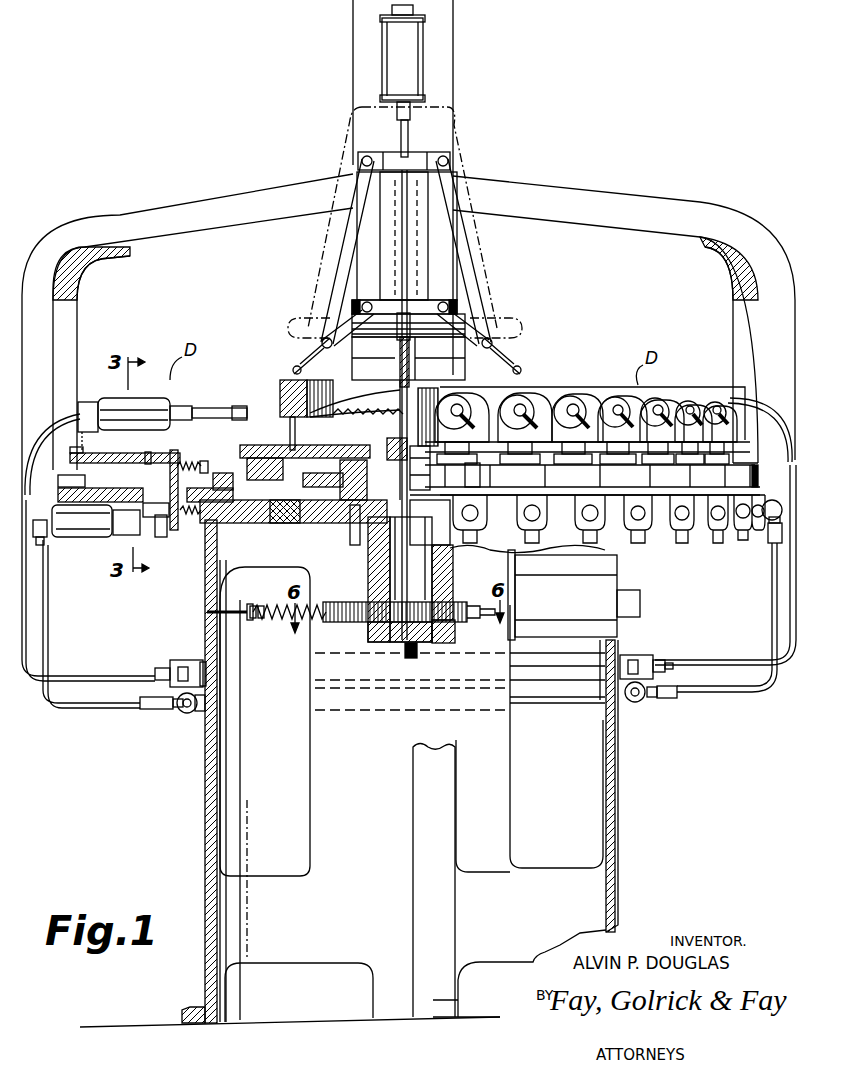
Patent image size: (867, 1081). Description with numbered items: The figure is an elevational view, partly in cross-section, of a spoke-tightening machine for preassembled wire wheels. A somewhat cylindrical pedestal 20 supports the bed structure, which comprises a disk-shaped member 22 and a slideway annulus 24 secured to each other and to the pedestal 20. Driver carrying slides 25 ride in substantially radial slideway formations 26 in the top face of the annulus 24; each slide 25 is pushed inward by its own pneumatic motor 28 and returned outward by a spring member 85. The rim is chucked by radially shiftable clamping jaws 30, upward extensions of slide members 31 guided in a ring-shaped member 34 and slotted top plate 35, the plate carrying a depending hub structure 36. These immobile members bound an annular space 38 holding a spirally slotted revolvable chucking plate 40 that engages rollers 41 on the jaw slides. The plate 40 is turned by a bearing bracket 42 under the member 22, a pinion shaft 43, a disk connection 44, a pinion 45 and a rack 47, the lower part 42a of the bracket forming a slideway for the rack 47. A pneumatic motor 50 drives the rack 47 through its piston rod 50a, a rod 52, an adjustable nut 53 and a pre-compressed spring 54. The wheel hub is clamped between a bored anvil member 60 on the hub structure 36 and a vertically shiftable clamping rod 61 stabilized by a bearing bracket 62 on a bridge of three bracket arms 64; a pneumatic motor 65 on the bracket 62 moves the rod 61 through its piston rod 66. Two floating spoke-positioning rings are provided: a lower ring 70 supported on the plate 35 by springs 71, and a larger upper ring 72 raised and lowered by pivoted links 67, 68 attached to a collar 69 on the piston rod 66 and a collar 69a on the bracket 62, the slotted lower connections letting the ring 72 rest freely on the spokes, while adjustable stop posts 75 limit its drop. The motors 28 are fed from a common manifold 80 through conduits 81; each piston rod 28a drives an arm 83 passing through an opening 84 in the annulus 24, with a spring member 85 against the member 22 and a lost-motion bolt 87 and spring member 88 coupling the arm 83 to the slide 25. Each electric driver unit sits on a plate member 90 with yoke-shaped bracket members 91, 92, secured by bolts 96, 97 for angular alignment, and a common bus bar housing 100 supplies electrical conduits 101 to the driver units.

The pedestal 20 is at (205, 798).
The disk-shaped member 22 is at (418, 512).
The slideway annulus 24 is at (58, 495).
The driver carrying slide 25 is at (72, 456).
The slideway formation 26 is at (62, 476).
The pneumatic motor 28 is at (88, 537).
The piston rod 28a is at (162, 540).
The clamping jaw 30 is at (245, 408).
The slide member 31 is at (273, 524).
The ring-shaped member 34 is at (232, 480).
The top plate 35 is at (278, 443).
The hub structure 36 is at (418, 478).
The annular space 38 is at (341, 505).
The chucking plate 40 is at (313, 488).
The roller 41 is at (356, 512).
The bearing bracket 42 is at (370, 578).
The lower part of bearing bracket 42a is at (446, 688).
The pinion shaft 43 is at (392, 590).
The disk connection 44 is at (470, 470).
The pinion 45 is at (366, 640).
The rack 47 is at (337, 622).
The pneumatic motor 50 is at (592, 592).
The piston rod 50a is at (452, 643).
The rod 52 is at (247, 612).
The adjustable nut 53 is at (254, 618).
The pre-compressed spring 54 is at (262, 620).
The anvil member 60 is at (395, 447).
The clamping rod 61 is at (395, 368).
The bearing bracket 62 is at (352, 73).
The bracket arms 64 is at (125, 215).
The pneumatic motor 65 is at (393, 44).
The piston rod 66 is at (403, 135).
The links 67 is at (470, 263).
The links 68 is at (522, 332).
The collar 69 is at (447, 148).
The collar 69a is at (433, 292).
The lower ring 70 is at (345, 452).
The springs 71 is at (425, 410).
The upper ring 72 is at (280, 390).
The adjustable stop post 75 is at (292, 420).
The manifold 80 is at (192, 714).
The conduit 81 is at (46, 708).
The arm 83 is at (175, 530).
The opening 84 is at (172, 510).
The spring member 85 is at (185, 515).
The bolt 87 is at (204, 461).
The spring member 88 is at (183, 462).
The plate member 90 is at (52, 420).
The yoke-shaped bracket member 91 is at (97, 402).
The yoke-shaped bracket member 92 is at (160, 398).
The bolt 96 is at (152, 458).
The bolt 97 is at (105, 447).
The bus bar housing 100 is at (185, 660).
The electrical conduit 101 is at (88, 672).